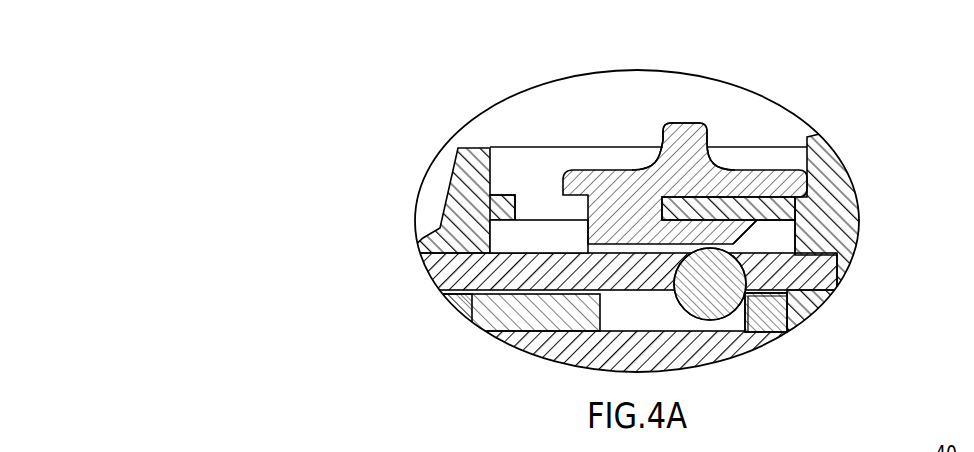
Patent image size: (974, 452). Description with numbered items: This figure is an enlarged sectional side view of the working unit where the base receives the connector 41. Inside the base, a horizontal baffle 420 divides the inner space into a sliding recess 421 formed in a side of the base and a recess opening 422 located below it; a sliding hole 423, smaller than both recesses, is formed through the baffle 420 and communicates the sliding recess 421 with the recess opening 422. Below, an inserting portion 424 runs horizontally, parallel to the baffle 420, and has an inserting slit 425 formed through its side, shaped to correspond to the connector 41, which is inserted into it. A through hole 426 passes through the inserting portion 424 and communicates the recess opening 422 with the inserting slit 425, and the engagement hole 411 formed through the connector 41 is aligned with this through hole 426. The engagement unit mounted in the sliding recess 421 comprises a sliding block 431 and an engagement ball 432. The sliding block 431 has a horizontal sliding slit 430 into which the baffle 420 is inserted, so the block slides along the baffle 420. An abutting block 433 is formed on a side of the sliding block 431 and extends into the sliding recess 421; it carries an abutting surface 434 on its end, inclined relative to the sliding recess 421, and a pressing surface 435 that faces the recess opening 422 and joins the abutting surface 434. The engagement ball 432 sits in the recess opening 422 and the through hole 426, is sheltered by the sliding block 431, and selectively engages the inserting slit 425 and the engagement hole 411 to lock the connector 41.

The connector 41 is at (520, 315).
The engagement hole 411 is at (607, 302).
The baffle 420 is at (710, 207).
The sliding recess 421 is at (498, 178).
The recess opening 422 is at (783, 248).
The sliding hole 423 is at (516, 207).
The inserting portion 424 is at (468, 266).
The inserting slit 425 is at (475, 297).
The through hole 426 is at (745, 268).
The sliding slit 430 is at (775, 203).
The sliding block 431 is at (686, 132).
The engagement ball 432 is at (700, 283).
The abutting block 433 is at (622, 212).
The abutting surface 434 is at (752, 240).
The pressing surface 435 is at (610, 262).